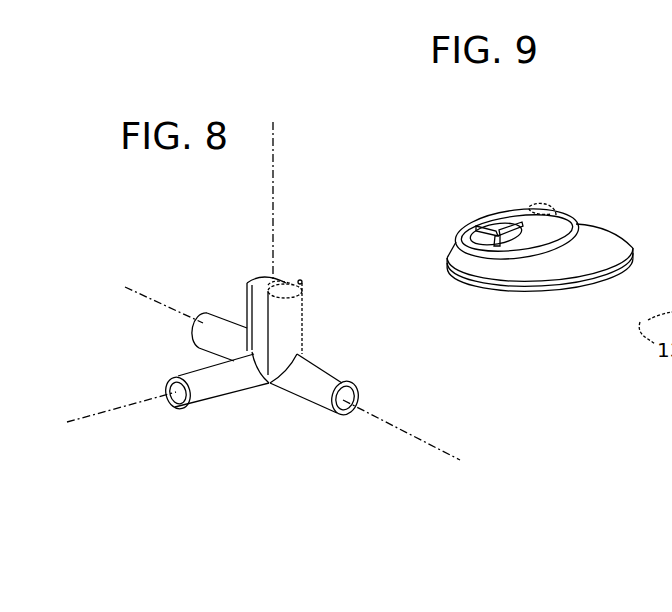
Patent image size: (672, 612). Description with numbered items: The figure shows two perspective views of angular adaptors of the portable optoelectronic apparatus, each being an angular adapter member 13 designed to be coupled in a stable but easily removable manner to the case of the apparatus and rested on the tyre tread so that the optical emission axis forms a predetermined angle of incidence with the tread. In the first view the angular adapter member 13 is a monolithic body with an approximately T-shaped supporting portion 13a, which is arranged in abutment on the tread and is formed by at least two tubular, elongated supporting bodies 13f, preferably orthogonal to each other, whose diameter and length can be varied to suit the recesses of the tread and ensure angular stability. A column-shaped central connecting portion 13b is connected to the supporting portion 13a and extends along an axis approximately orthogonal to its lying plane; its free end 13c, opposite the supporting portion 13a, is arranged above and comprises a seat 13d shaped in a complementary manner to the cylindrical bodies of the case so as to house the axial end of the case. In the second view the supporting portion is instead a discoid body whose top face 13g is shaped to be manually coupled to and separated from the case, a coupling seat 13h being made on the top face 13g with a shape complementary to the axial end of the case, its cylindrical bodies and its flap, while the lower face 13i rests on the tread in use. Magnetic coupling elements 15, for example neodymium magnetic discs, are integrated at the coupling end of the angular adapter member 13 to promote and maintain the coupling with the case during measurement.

In FIG. 8, the angular adapter member 13 is at (267, 333).
In FIG. 9, the angular adapter member 13 is at (540, 236).
In FIG. 8, the supporting portion 13a is at (276, 410).
In FIG. 8, the central connecting portion 13b is at (288, 330).
In FIG. 8, the free end 13c is at (312, 294).
In FIG. 8, the seat 13d is at (292, 272).
In FIG. 8, the supporting bodies 13f is at (212, 305).
In FIG. 9, the top face 13g is at (512, 205).
In FIG. 9, the coupling seat 13h is at (478, 225).
In FIG. 9, the lower face 13i is at (500, 310).
In FIG. 8, the magnetic coupling elements 15 is at (263, 276).
In FIG. 9, the magnetic coupling elements 15 is at (556, 215).